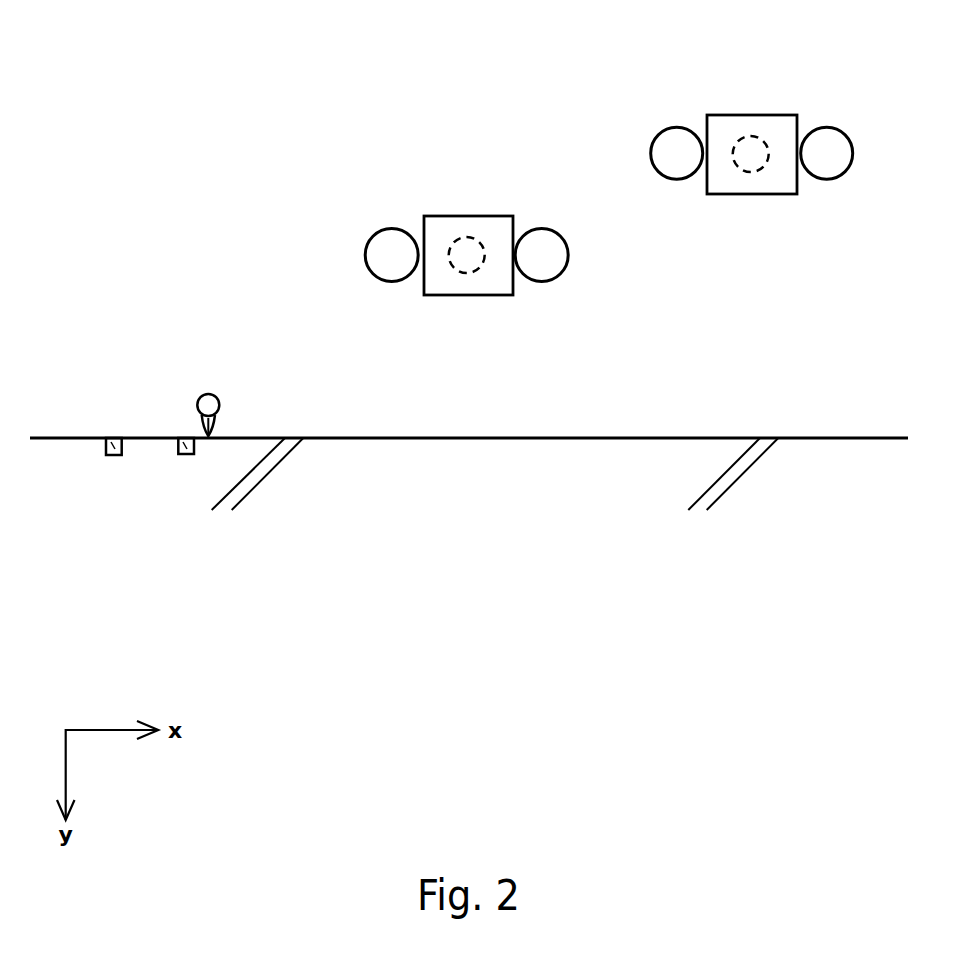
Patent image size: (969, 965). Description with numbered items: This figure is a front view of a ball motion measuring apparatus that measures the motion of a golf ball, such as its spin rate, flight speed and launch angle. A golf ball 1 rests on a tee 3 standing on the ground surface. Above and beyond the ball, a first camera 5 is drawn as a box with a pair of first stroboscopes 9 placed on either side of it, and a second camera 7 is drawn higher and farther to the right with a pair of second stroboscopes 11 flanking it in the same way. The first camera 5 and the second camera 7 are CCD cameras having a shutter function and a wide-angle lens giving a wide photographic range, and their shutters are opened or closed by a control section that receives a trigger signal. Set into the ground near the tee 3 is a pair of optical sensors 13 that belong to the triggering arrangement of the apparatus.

The golf ball 1 is at (205, 405).
The tee 3 is at (222, 418).
The first camera 5 is at (497, 245).
The second camera 7 is at (782, 142).
The first stroboscopes 9 is at (395, 247).
The second stroboscopes 11 is at (682, 147).
The optical sensors 13 is at (113, 455).